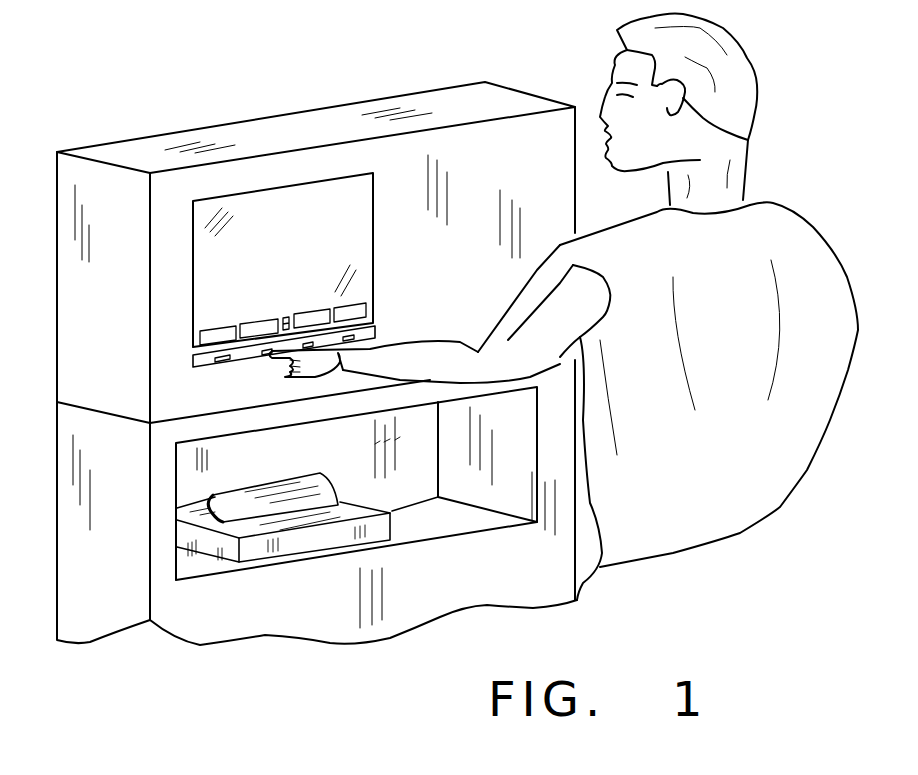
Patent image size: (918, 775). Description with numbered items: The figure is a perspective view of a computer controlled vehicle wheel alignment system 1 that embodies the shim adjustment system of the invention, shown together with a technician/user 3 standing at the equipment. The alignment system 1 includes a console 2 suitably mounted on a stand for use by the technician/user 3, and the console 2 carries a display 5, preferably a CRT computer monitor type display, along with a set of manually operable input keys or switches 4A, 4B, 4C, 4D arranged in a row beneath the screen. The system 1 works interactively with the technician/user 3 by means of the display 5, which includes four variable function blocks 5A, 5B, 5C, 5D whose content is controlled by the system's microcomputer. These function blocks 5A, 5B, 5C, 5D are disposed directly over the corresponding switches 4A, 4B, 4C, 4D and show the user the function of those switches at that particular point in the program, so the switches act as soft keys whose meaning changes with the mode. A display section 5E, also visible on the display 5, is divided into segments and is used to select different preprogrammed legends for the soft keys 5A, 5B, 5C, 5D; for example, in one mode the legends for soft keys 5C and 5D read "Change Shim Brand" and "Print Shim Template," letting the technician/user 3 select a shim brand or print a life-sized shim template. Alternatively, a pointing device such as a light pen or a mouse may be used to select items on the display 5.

The vehicle wheel alignment system 1 is at (197, 63).
The console 2 is at (420, 91).
The technician/user 3 is at (740, 40).
The display 5 is at (296, 223).
The variable function block 5A is at (212, 330).
The variable function block 5B is at (259, 322).
The variable function block 5C is at (306, 313).
The variable function block 5D is at (336, 305).
The display section 5E is at (287, 316).
The input key or switch 4A is at (205, 363).
The input key or switch 4B is at (267, 358).
The input key or switch 4C is at (350, 321).
The input key or switch 4D is at (343, 340).